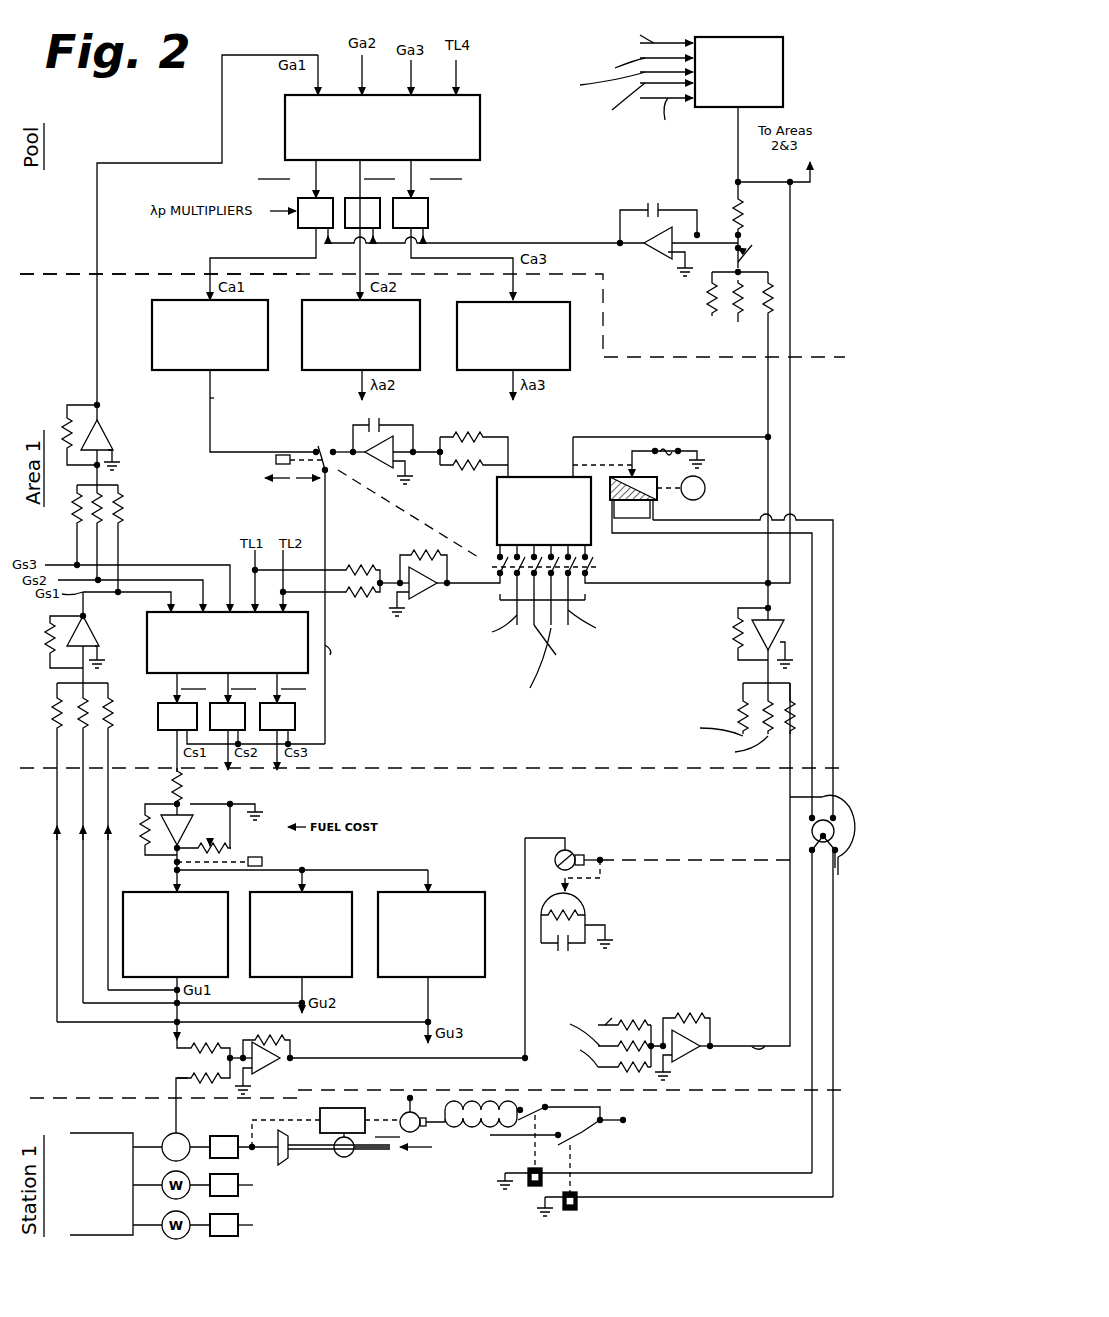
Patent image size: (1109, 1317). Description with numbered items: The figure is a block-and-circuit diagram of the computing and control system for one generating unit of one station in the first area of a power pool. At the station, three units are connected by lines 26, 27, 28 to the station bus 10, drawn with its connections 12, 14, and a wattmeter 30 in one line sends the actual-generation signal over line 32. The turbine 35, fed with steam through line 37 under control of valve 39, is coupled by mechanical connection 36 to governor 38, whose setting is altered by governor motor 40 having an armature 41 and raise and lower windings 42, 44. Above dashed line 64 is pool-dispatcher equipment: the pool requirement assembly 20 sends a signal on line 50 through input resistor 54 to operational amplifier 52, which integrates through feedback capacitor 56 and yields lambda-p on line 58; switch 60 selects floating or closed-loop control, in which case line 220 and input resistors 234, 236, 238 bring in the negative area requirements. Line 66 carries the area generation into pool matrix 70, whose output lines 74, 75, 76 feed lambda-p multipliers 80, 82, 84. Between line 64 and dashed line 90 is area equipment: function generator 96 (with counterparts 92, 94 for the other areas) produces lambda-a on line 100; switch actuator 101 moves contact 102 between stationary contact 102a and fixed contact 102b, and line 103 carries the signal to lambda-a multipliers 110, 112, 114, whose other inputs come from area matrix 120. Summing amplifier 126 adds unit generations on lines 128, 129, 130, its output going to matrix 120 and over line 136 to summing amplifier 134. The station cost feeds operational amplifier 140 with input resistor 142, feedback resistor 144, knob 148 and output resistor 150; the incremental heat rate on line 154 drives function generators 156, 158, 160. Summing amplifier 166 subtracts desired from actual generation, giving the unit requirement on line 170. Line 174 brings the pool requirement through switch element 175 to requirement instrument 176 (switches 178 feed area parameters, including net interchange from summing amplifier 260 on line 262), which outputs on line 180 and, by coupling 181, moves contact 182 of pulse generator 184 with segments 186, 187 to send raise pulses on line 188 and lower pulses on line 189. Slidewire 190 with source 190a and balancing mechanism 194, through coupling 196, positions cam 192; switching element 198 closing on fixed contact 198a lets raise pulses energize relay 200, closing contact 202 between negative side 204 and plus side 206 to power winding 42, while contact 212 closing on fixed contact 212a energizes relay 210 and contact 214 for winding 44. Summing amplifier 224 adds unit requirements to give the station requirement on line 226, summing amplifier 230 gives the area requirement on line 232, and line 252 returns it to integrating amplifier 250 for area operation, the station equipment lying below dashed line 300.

The station bus 10 is at (133, 1168).
The bus top 12 is at (110, 1133).
The bus bottom 14 is at (88, 1235).
The pool requirement assembly 20 is at (773, 68).
The line 26 is at (147, 1146).
The line 27 is at (147, 1185).
The line 28 is at (150, 1225).
The wattmeter 30 is at (190, 1138).
The line 32 is at (172, 1085).
The turbine 35 is at (332, 1169).
The mechanical connection 36 is at (272, 1120).
The steam line 37 is at (376, 1152).
The governor 38 is at (355, 1108).
The turbine control valve 39 is at (350, 1158).
The governor motor 40 is at (389, 1126).
The armature 41 is at (422, 1150).
The raise winding 42 is at (520, 1055).
The lower winding 44 is at (473, 1114).
The output line 50 is at (738, 163).
The operational amplifier 52 is at (656, 250).
The input resistor 54 is at (736, 214).
The feedback capacitor 56 is at (650, 203).
The line 58 is at (553, 240).
The switch 60 is at (750, 250).
The dashed line 64 is at (135, 253).
The line 66 is at (97, 168).
The pool matrix 70 is at (455, 128).
The output line 74 is at (312, 165).
The output line 75 is at (360, 172).
The output line 76 is at (413, 182).
The lambda-p multiplier 80 is at (315, 213).
The lambda-p multiplier 82 is at (362, 213).
The lambda-p multiplier 84 is at (410, 213).
The dashed line 90 is at (60, 1097).
The function generator 92 is at (420, 322).
The function generator 94 is at (563, 328).
The function generator 96 is at (152, 320).
The line 100 is at (210, 425).
The switch actuator 101 is at (282, 455).
The movable switch contact 102 is at (316, 450).
The stationary contact 102a is at (332, 448).
The fixed contact 102b is at (333, 472).
The lambda a1 feedback line 103 is at (325, 708).
The lambda-a1 multiplier 110 is at (183, 701).
The lambda-a1 multiplier 112 is at (234, 701).
The lambda-a1 multiplier 114 is at (284, 701).
The area matrix 120 is at (147, 645).
The summing amplifier 126 is at (97, 650).
The line 128 is at (125, 756).
The line 129 is at (85, 748).
The line 130 is at (56, 760).
The summing amplifier 134 is at (103, 437).
The line 136 is at (120, 540).
The operational amplifier 140 is at (193, 820).
The input resistor 142 is at (172, 778).
The feedback resistor 144 is at (145, 840).
The knob 148 is at (262, 861).
The output resistor 150 is at (212, 840).
The line 154 is at (175, 868).
The function generator 156 is at (218, 962).
The function generator 158 is at (342, 958).
The function generator 160 is at (470, 895).
The summing amplifier 166 is at (285, 1052).
The line 170 is at (398, 1055).
The line 174 is at (791, 388).
The switch element 175 is at (597, 575).
The requirement instrument 176 is at (497, 487).
The switches 178 is at (565, 600).
The line 180 is at (508, 475).
The mechanical coupling 181 is at (573, 462).
The contact 182 is at (632, 462).
The pulse generator 184 is at (633, 498).
The conducting segment 186 is at (612, 520).
The conducting segment 187 is at (658, 490).
The line 188 is at (676, 533).
The line 189 is at (745, 520).
The center tapped slidewire 190 is at (580, 903).
The source 190a is at (566, 948).
The cam 192 is at (832, 860).
The balancing mechanism 194 is at (570, 856).
The mechanical coupling 196 is at (670, 860).
The cam operated switching element 198 is at (812, 830).
The fixed contact 198a is at (808, 858).
The relay 200 is at (532, 1190).
The relay contact 202 is at (528, 1105).
The negative side 204 is at (625, 1123).
The plus side 206 is at (437, 1090).
The relay 210 is at (578, 1210).
The cam operated contact 212 is at (790, 797).
The fixed contact 212a is at (838, 870).
The relay contact 214 is at (578, 1140).
The line 220 is at (721, 256).
The summing amplifier 224 is at (725, 1050).
The line 226 is at (788, 960).
The summing amplifier 230 is at (745, 648).
The line 232 is at (768, 608).
The input resistor 234 is at (771, 300).
The input resistor 236 is at (742, 310).
The input resistor 238 is at (710, 300).
The integrating amplifier 250 is at (385, 438).
The area requirement line 252 is at (600, 437).
The summing amplifier 260 is at (465, 590).
The line 262 is at (500, 585).
The area/unit boundary 300 is at (444, 768).